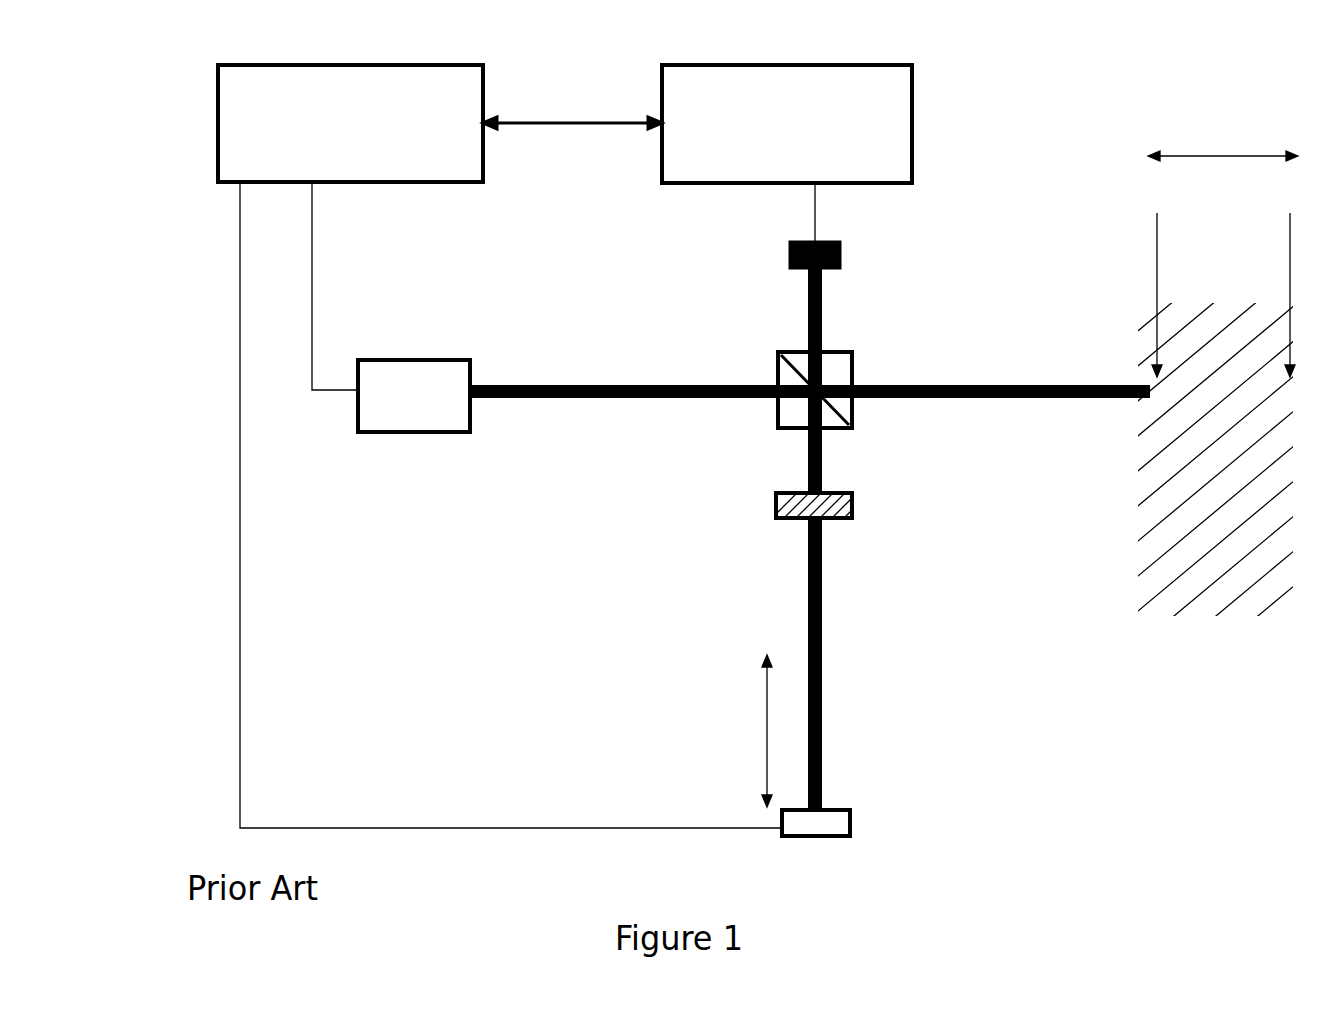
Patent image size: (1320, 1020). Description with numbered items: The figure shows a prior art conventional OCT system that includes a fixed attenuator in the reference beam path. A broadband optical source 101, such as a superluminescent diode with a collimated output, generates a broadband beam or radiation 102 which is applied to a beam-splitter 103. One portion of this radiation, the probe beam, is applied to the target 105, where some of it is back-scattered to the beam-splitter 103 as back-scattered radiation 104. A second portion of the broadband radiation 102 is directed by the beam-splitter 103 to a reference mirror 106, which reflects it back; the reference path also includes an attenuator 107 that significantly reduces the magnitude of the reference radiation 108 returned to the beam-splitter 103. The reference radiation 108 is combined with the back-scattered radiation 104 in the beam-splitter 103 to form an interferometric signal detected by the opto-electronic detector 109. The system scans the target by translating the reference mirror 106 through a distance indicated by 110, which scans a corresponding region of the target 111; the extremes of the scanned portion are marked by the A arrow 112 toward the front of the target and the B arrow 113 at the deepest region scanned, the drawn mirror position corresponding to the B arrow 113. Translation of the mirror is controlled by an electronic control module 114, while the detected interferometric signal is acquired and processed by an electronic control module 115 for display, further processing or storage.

The broadband optical source 101 is at (477, 417).
The broadband beam or radiation 102 is at (620, 373).
The beam-splitter 103 is at (858, 420).
The back-scattered radiation 104 is at (965, 375).
The target 105 is at (1217, 627).
The reference mirror 106 is at (860, 807).
The attenuator 107 is at (767, 507).
The reference radiation 108 is at (827, 468).
The opto-electronic detector 109 is at (787, 267).
The translation distance of reference mirror 110 is at (753, 722).
The scanned region of target 111 is at (1200, 140).
The A arrow 112 is at (1147, 267).
The B arrow 113 is at (1283, 267).
The electronic control module 114 is at (216, 114).
The electronic control module 115 is at (930, 115).